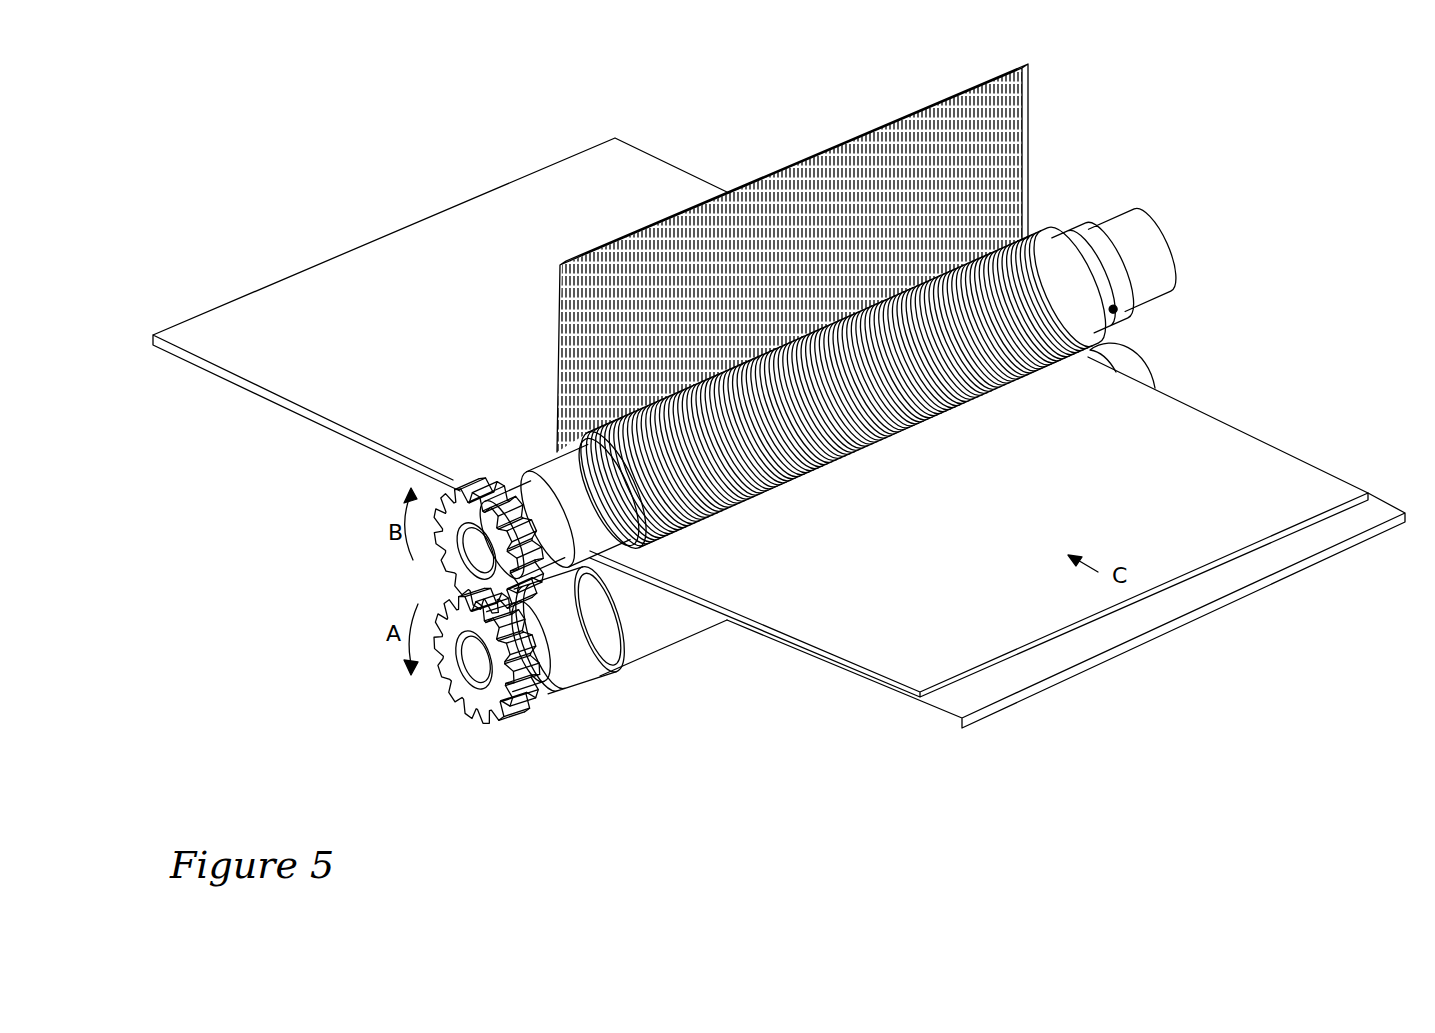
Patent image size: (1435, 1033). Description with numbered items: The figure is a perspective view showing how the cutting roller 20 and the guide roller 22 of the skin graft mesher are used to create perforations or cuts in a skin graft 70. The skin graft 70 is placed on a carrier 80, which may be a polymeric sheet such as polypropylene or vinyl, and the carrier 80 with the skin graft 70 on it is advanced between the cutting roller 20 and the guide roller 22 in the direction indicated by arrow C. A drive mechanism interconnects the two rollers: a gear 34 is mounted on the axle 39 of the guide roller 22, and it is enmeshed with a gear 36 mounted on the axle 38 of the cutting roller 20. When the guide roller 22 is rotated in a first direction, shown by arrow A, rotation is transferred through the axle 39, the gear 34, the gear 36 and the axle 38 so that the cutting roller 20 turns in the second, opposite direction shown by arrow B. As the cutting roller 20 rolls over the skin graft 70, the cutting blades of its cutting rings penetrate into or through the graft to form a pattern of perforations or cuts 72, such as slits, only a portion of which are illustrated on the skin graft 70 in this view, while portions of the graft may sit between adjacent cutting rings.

The cutting roller 20 is at (1040, 235).
The guide roller 22 is at (650, 631).
The gear 34 is at (463, 697).
The gear 36 is at (447, 568).
The axle 38 is at (465, 547).
The axle 39 is at (483, 672).
The skin graft 70 is at (1028, 107).
The perforations or cuts 72 is at (900, 122).
The carrier 80 is at (327, 282).